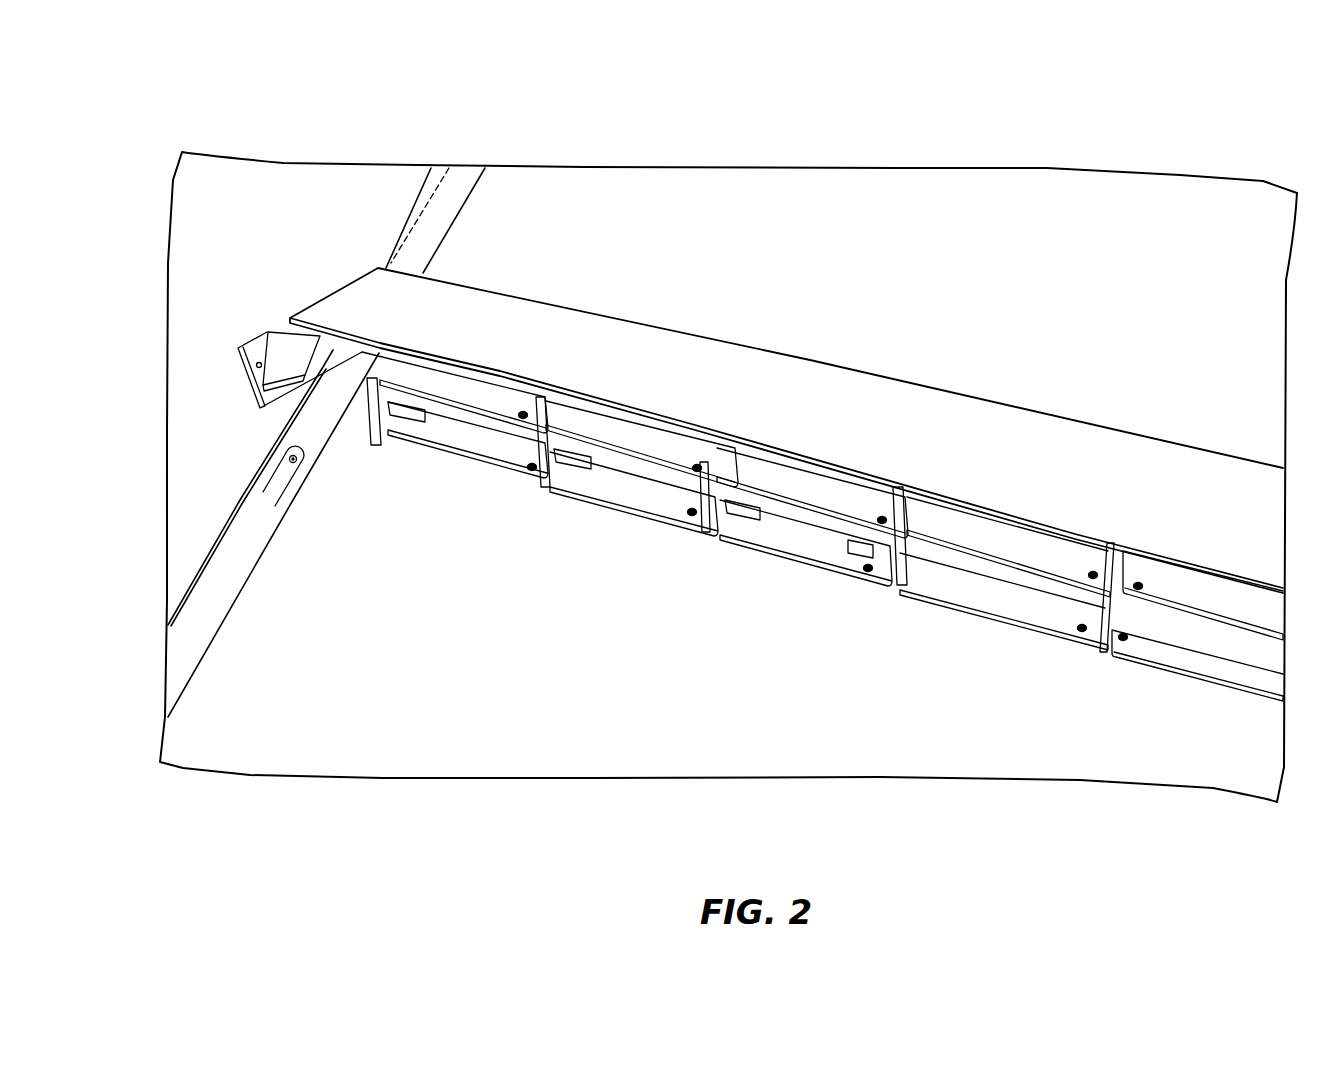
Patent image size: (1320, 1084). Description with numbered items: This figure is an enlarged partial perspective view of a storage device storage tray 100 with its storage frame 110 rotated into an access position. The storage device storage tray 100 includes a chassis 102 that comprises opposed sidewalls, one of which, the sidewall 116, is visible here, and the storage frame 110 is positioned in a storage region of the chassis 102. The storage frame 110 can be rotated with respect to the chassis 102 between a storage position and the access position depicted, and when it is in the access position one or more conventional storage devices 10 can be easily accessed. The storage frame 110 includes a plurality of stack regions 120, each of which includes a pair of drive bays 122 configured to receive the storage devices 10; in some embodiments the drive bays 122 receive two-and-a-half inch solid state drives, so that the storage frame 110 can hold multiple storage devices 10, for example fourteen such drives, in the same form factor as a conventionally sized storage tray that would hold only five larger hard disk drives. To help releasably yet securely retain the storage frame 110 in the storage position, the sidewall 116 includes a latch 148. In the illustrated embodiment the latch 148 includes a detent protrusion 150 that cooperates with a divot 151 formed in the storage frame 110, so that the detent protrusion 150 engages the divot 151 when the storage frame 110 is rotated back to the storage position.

The storage device 10 is at (668, 437).
The storage device storage tray 100 is at (953, 187).
The chassis 102 is at (422, 185).
The storage frame 110 is at (1092, 480).
The sidewall 116 is at (196, 625).
The stack region 120 is at (448, 432).
The drive bay 122 is at (813, 483).
The latch 148 is at (280, 472).
The detent protrusion 150 is at (283, 450).
The divot 151 is at (256, 357).